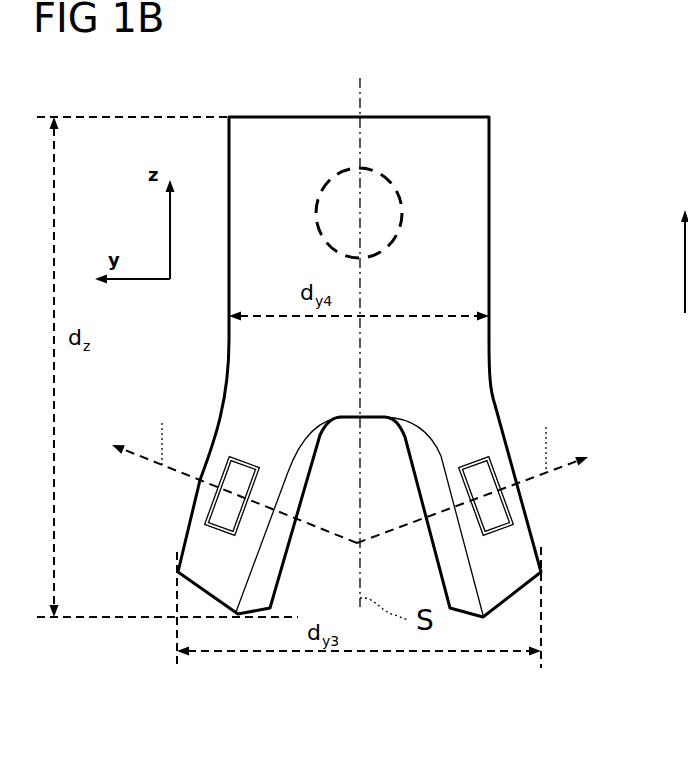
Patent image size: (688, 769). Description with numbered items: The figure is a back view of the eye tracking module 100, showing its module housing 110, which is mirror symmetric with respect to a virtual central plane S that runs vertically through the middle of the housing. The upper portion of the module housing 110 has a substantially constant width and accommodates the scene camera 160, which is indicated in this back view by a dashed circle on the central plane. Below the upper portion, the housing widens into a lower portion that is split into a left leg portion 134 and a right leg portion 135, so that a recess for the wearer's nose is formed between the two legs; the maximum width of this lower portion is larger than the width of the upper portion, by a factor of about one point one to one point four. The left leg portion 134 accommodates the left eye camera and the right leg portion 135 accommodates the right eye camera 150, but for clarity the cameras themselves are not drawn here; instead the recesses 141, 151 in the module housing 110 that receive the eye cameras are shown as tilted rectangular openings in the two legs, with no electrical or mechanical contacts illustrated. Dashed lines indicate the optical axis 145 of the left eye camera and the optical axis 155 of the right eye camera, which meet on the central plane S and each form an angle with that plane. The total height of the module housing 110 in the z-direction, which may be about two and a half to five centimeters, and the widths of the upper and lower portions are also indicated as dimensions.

The eye tracking module 100 is at (333, 61).
The module housing 110 is at (466, 112).
The left leg portion 134 is at (180, 510).
The right leg portion 135 is at (538, 511).
The recess 141 is at (248, 447).
The recess 151 is at (465, 447).
The optical axis 145 is at (234, 469).
The optical axis 155 is at (472, 469).
The scene camera 160 is at (452, 211).
The right eye camera 150 is at (565, 5).